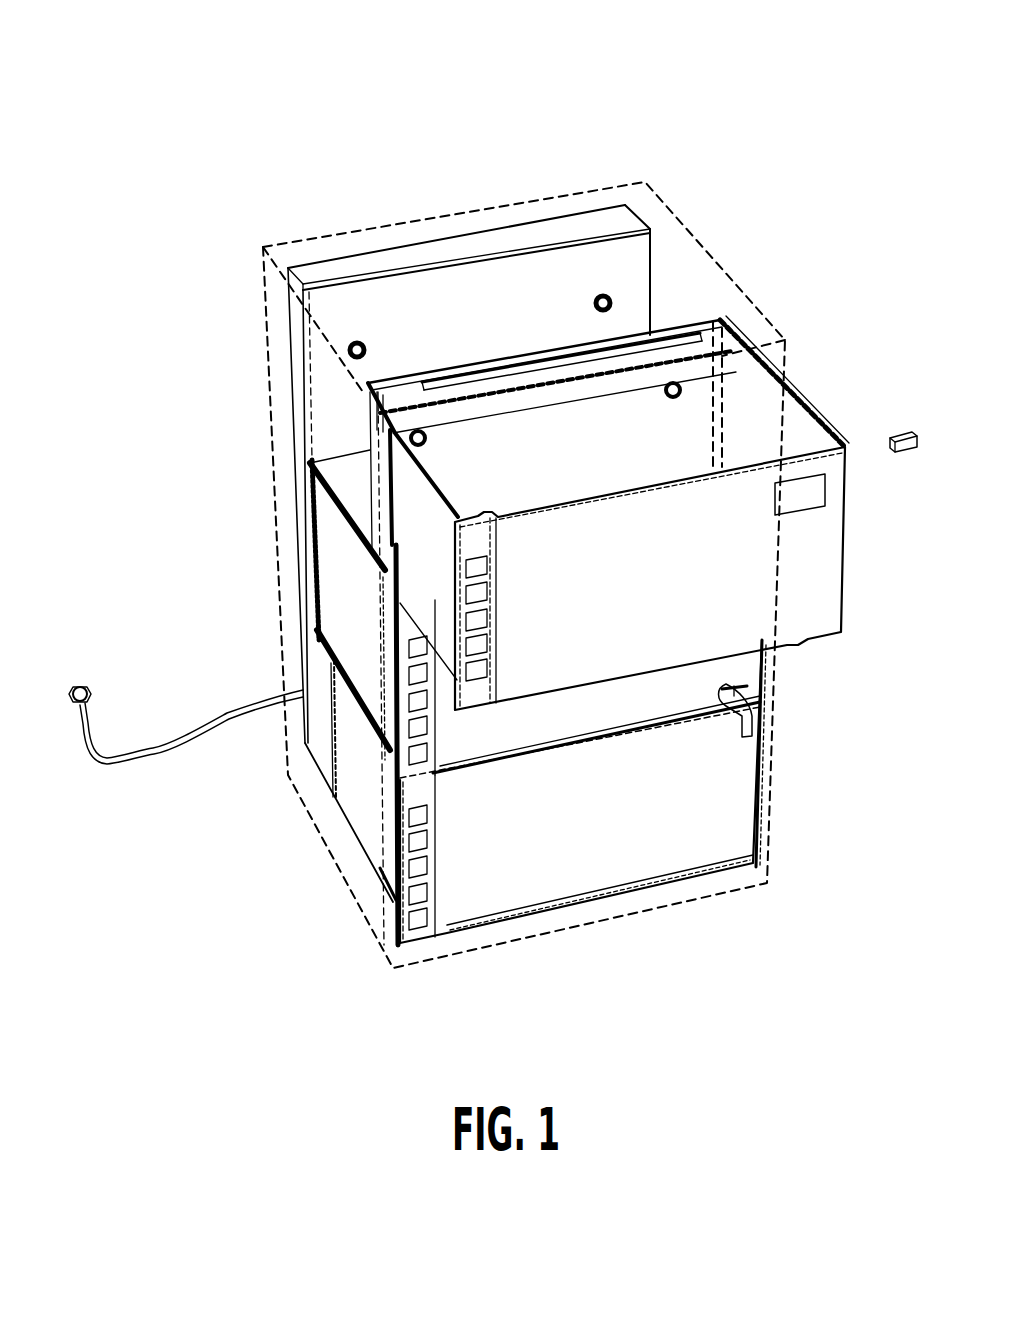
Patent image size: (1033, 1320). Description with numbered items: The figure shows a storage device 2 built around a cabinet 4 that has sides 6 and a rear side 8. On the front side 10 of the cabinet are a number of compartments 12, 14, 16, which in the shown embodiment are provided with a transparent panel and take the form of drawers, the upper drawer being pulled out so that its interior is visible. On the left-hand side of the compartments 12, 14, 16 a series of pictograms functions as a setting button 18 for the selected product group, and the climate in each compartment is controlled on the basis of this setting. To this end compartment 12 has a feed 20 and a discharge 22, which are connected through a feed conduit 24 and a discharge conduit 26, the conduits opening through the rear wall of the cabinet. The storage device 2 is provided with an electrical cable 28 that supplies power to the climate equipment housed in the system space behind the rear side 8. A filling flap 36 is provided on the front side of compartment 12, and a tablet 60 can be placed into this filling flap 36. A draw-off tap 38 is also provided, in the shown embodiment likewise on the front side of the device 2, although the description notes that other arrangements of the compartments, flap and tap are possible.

The storage device 2 is at (248, 140).
The cabinet 4 is at (431, 484).
The sides 6 is at (232, 585).
The rear side 8 is at (458, 158).
The front side 10 is at (632, 732).
The compartment 12 is at (632, 527).
The compartment 14 is at (581, 825).
The compartment 16 is at (595, 880).
The setting button 18 is at (482, 592).
The feed 20 is at (678, 397).
The discharge 22 is at (426, 437).
The feed conduit 24 is at (612, 303).
The discharge conduit 26 is at (365, 350).
The electrical cable 28 is at (170, 752).
The filling flap 36 is at (800, 508).
The draw-off tap 38 is at (740, 718).
The tablet 60 is at (898, 432).